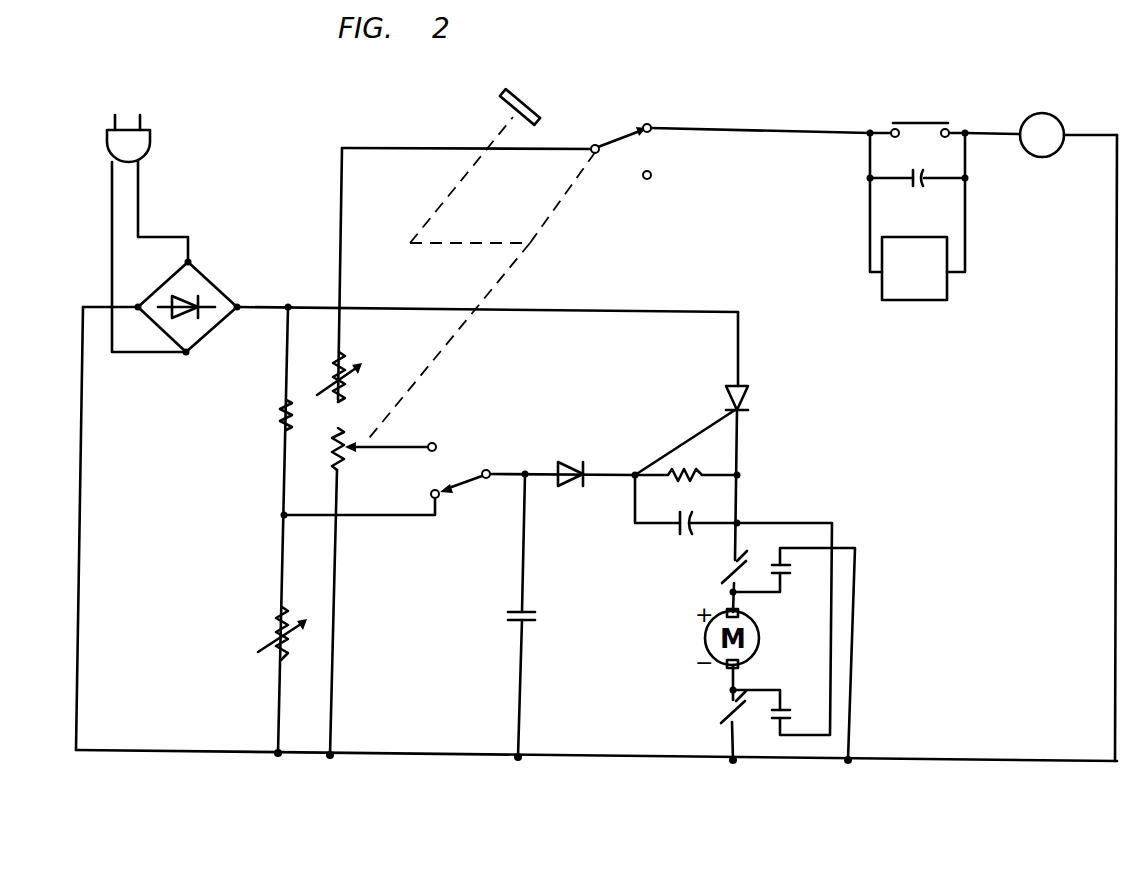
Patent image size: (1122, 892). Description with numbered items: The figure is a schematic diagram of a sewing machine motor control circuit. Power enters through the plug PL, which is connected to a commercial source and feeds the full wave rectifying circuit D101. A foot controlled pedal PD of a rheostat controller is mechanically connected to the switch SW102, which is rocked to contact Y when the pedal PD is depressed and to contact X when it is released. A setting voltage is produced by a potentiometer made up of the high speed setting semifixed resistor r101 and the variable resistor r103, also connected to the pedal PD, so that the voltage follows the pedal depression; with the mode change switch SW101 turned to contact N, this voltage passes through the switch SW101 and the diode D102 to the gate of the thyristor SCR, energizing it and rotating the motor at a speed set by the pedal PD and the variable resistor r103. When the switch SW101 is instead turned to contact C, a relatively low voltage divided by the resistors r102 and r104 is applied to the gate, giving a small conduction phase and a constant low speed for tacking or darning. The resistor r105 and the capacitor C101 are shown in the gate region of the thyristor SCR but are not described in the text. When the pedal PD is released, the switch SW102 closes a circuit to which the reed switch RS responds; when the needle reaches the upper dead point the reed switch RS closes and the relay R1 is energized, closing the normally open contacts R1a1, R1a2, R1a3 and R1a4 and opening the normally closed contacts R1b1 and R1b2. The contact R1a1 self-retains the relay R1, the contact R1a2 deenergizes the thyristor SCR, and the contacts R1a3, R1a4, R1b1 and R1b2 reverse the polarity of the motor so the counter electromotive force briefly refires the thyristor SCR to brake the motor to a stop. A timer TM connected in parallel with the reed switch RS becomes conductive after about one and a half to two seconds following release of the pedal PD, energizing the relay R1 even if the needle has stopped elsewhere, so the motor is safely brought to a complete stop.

The plug PL is at (150, 147).
The full wave rectifying circuit D101 is at (210, 322).
The high speed setting semifixed resistor r101 is at (344, 382).
The resistor r102 is at (274, 414).
The variable resistor r103 is at (345, 463).
The resistor r104 is at (277, 610).
The resistor r105 is at (687, 459).
The mode change switch SW101 is at (458, 503).
The switch SW102 is at (624, 164).
The foot controlled pedal PD is at (522, 100).
The diode D102 is at (576, 488).
The thyristor SCR is at (733, 386).
The capacitor C101 is at (676, 522).
The normally open contact R1a1 is at (924, 186).
The normally open contact R1a2 is at (506, 622).
The normally open contact R1a3 is at (782, 578).
The normally open contact R1a4 is at (785, 708).
The normally closed contact R1b1 is at (722, 565).
The normally closed contact R1b2 is at (722, 706).
The timer TM is at (915, 300).
The reed switch RS is at (918, 121).
The relay R1 is at (1042, 135).